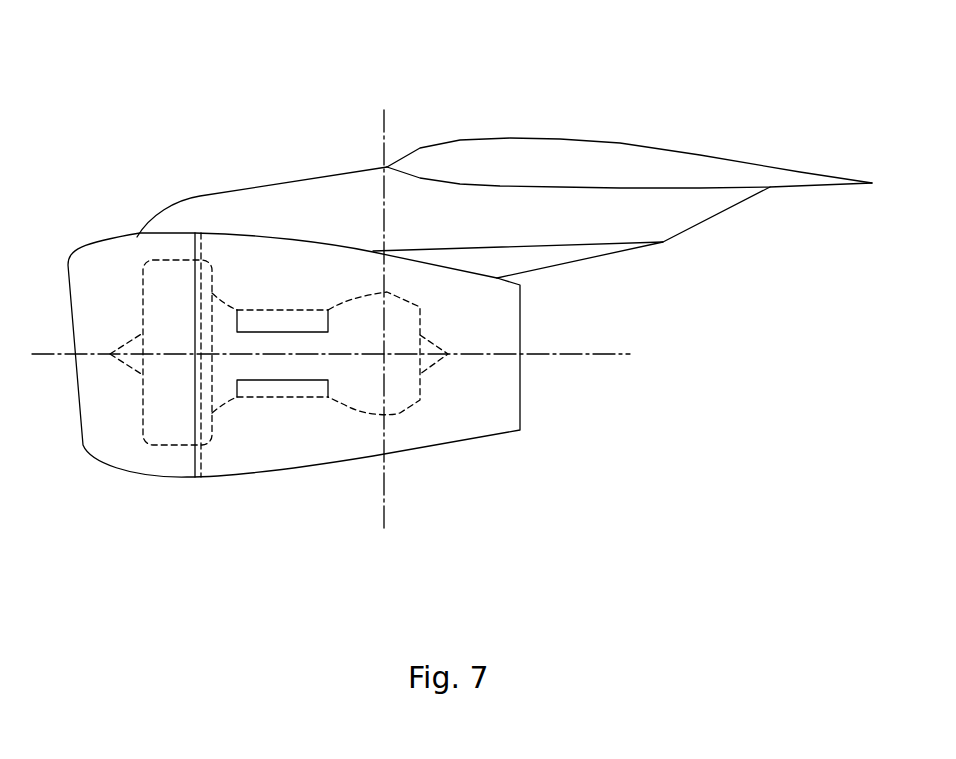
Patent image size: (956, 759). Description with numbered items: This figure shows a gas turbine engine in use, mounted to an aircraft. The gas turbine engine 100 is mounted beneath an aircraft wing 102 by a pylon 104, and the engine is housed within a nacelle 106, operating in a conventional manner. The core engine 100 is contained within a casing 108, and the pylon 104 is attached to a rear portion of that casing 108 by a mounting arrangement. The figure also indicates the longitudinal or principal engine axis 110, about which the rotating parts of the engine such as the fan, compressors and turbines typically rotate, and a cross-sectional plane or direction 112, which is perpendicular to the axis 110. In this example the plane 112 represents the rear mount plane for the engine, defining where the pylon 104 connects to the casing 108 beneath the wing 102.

The gas turbine engine 100 is at (343, 383).
The aircraft wing 102 is at (573, 143).
The pylon 104 is at (268, 188).
The nacelle 106 is at (183, 477).
The casing 108 is at (403, 410).
The engine axis 110 is at (563, 354).
The cross-sectional plane 112 is at (384, 110).